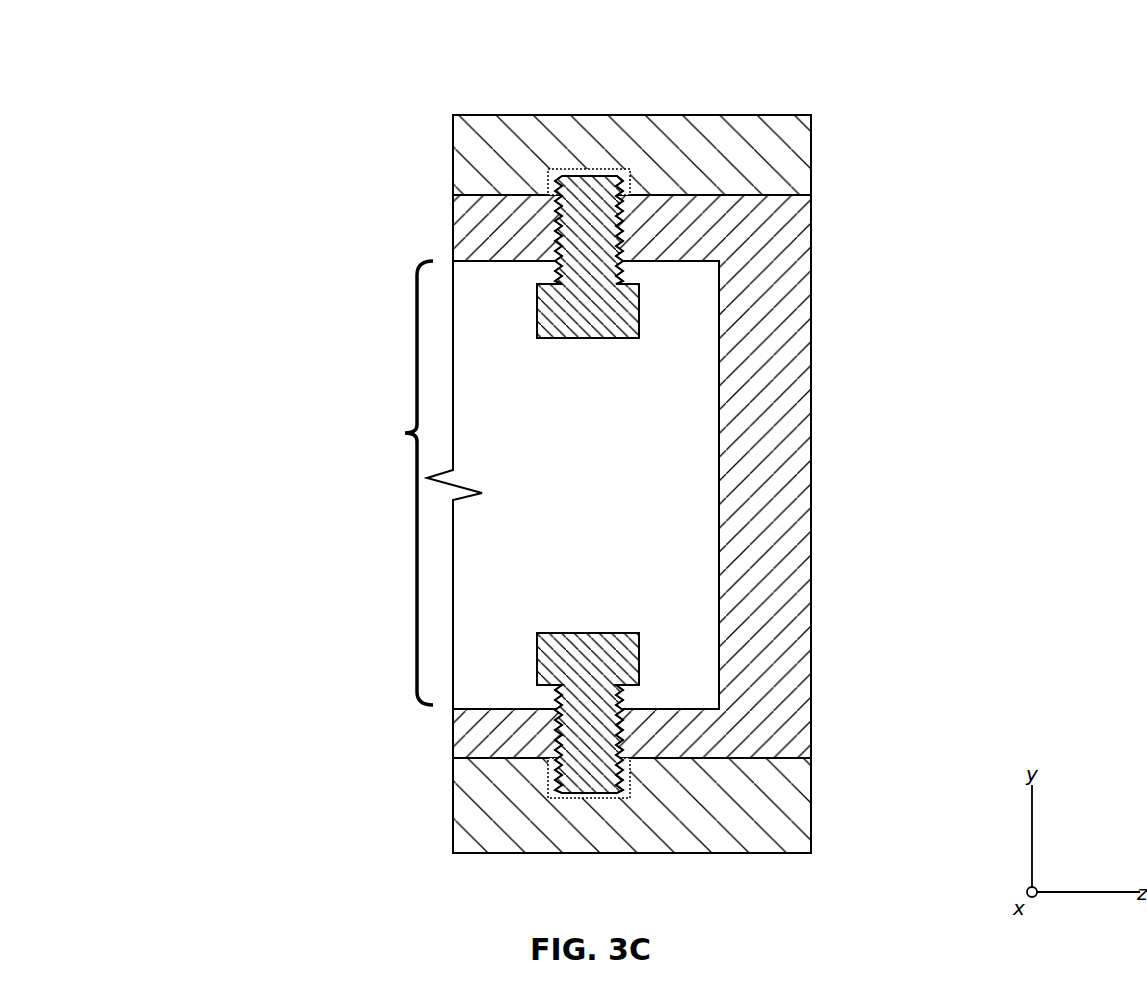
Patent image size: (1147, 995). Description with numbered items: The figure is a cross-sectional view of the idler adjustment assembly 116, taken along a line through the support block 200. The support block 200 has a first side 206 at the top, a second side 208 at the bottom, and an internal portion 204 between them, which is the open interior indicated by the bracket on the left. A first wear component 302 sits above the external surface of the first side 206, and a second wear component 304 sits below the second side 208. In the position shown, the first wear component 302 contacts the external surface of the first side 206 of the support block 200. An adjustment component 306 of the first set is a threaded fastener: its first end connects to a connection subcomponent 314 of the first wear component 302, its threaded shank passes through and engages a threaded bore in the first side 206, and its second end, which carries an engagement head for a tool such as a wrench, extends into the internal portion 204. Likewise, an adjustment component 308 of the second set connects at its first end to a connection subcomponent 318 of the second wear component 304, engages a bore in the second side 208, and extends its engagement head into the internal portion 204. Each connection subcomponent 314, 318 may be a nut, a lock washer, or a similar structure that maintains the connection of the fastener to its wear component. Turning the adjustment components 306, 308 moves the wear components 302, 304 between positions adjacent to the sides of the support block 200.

The idler adjustment assembly 116 is at (135, 86).
The support block 200 is at (777, 470).
The internal portion 204 is at (400, 432).
The first side 206 is at (717, 193).
The second side 208 is at (720, 760).
The first wear component 302 is at (780, 145).
The second wear component 304 is at (752, 815).
The first set of one or more adjustment components 306 is at (590, 342).
The second set of one or more adjustment components 308 is at (590, 627).
The first set of one or more connection subcomponents 314 is at (549, 168).
The second set of one or more connection subcomponents 318 is at (545, 793).